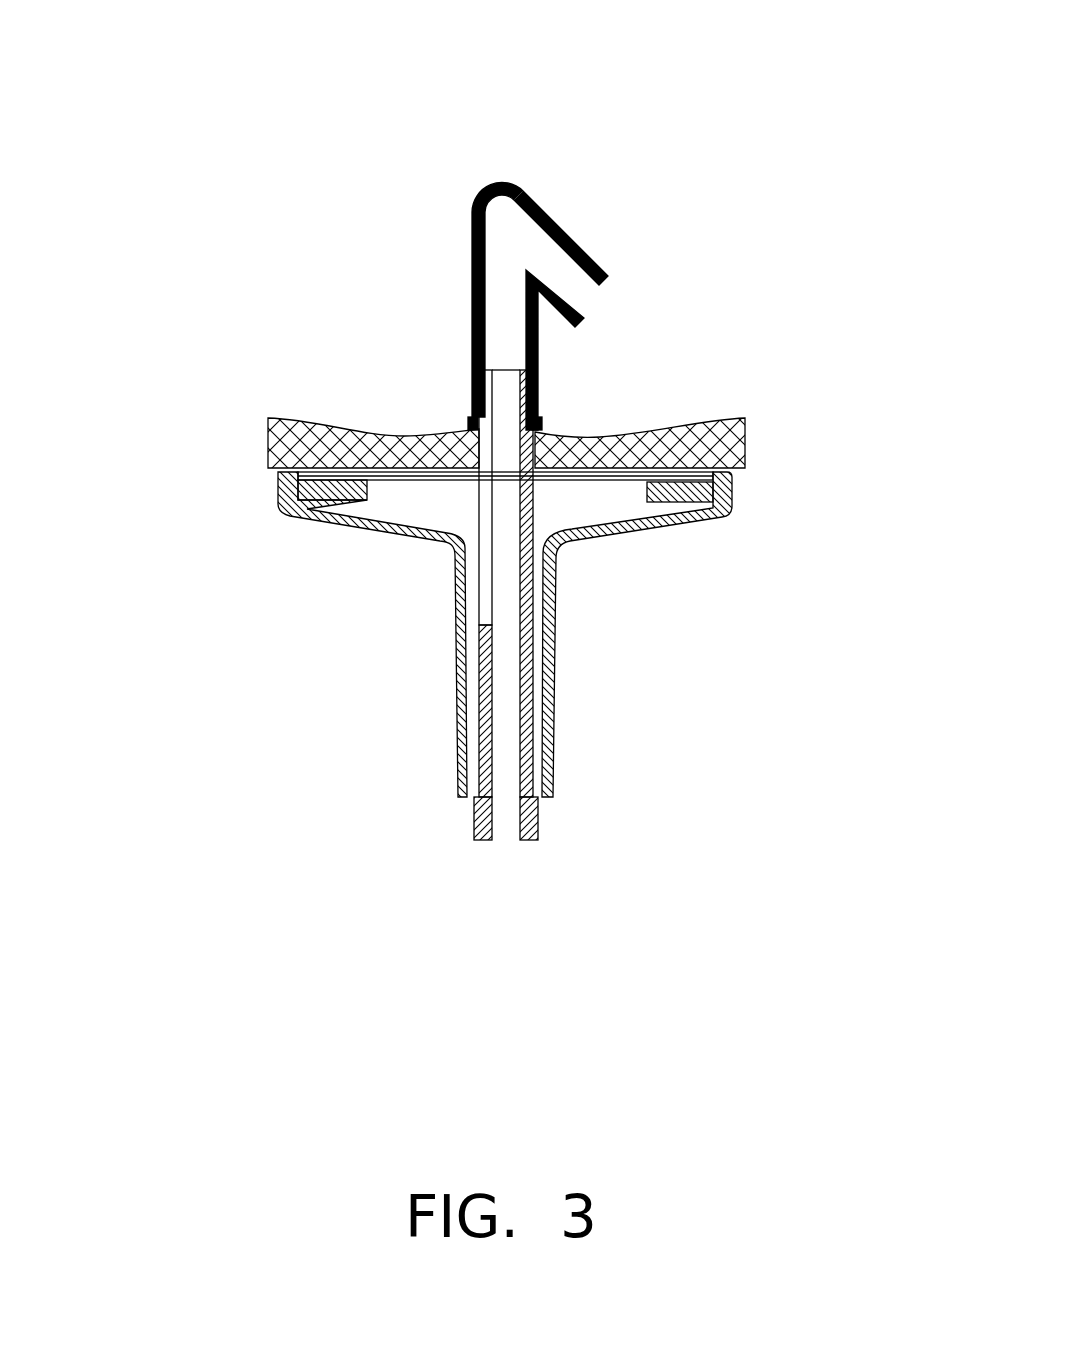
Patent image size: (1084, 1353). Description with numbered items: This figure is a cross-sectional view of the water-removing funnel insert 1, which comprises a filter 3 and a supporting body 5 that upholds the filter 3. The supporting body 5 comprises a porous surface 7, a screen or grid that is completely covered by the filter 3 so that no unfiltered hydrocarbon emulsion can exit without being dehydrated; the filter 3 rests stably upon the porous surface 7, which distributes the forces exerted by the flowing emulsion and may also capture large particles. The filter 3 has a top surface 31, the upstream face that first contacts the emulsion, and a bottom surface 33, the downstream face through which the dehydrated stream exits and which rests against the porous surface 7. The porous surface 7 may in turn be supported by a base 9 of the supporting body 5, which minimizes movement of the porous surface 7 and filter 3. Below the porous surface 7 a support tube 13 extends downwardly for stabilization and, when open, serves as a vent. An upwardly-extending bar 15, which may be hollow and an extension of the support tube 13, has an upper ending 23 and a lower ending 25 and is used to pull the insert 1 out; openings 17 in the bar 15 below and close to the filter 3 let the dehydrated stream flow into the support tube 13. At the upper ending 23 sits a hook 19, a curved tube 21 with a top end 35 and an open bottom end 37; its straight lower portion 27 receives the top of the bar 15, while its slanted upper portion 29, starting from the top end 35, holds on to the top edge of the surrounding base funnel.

The water-removing funnel insert 1 is at (847, 126).
The filter 3 is at (307, 418).
The supporting body 5 is at (597, 673).
The porous surface 7 is at (700, 490).
The base 9 is at (717, 673).
The support tube 13 is at (557, 705).
The upwardly-extending bar 15 is at (359, 690).
The openings 17 is at (480, 567).
The hook 19 is at (532, 193).
The curved tube 21 is at (573, 238).
The upper ending 23 is at (609, 247).
The lower ending 25 is at (505, 844).
The lower portion 27 is at (472, 250).
The slanted upper portion 29 is at (563, 317).
The top surface 31 is at (650, 433).
The bottom surface 33 is at (272, 469).
The top end 35 is at (602, 293).
The open bottom end 37 is at (470, 420).